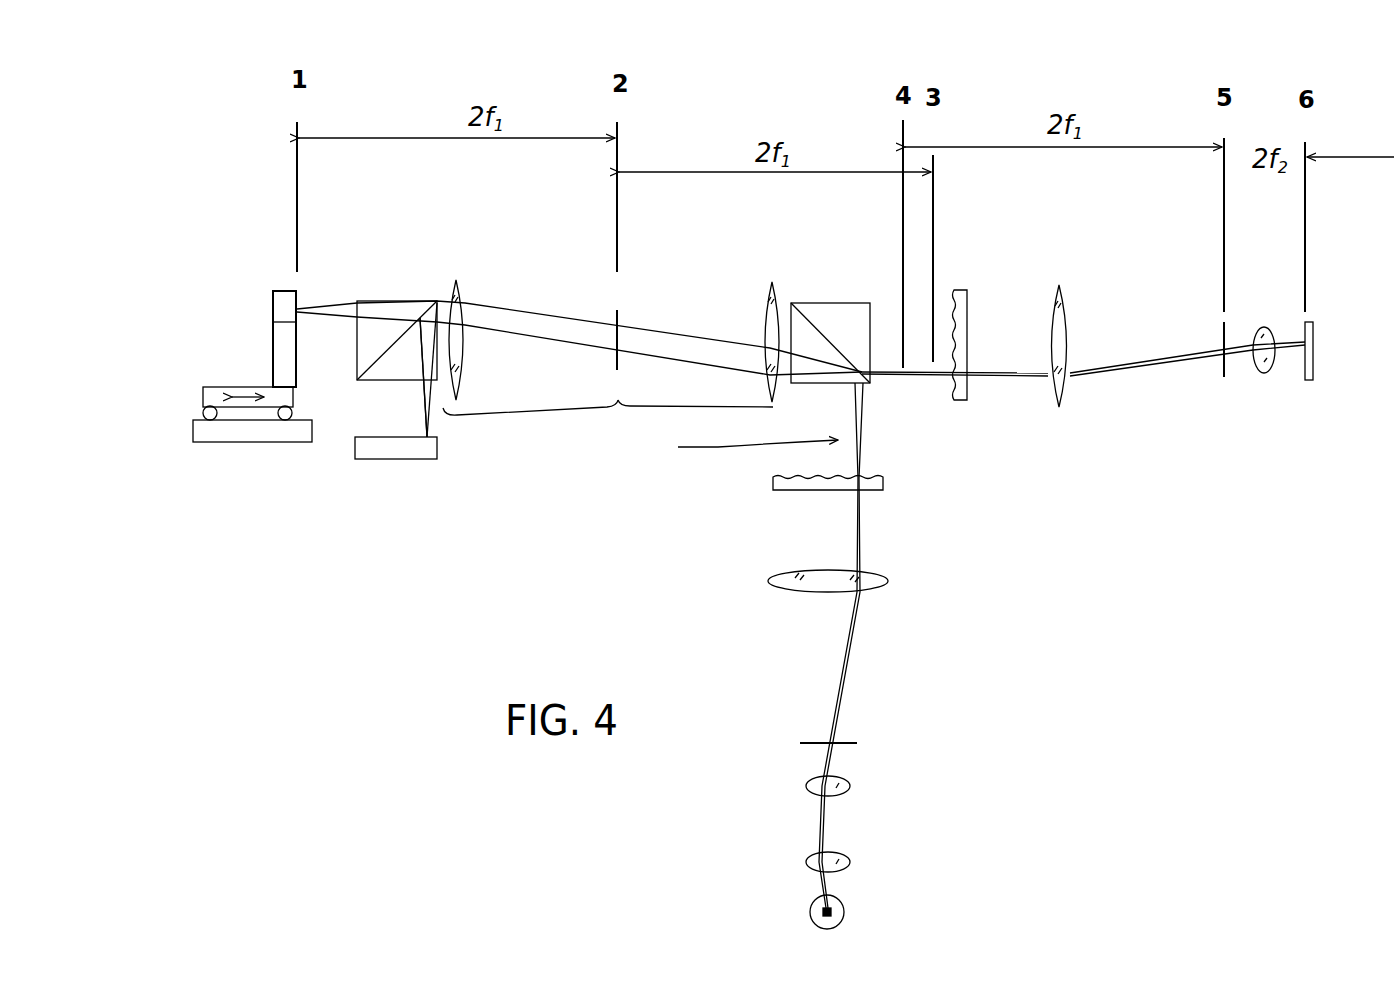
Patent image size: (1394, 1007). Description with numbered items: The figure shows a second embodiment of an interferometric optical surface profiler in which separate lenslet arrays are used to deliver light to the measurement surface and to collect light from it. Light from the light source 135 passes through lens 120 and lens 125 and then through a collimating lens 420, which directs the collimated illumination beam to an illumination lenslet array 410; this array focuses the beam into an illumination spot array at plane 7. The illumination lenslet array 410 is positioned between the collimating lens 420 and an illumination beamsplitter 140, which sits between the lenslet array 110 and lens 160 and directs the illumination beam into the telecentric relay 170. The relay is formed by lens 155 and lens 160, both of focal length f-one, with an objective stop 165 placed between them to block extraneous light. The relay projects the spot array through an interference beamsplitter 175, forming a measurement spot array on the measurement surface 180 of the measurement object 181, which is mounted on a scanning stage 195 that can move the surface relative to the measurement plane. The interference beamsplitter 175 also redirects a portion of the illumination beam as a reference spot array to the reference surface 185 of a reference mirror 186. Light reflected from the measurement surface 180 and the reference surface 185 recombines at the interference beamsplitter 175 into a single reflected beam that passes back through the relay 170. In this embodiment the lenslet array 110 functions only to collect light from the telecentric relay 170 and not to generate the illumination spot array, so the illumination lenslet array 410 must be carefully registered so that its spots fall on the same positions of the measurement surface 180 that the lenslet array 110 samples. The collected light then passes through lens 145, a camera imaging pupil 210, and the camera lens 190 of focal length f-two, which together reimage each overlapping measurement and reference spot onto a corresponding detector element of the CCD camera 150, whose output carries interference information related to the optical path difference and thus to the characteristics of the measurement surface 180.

The measurement surface 180 is at (300, 296).
The measurement object 181 is at (274, 322).
The scanning stage 195 is at (203, 394).
The interference beamsplitter 175 is at (358, 346).
The reference surface 185 is at (414, 435).
The reference mirror 186 is at (396, 445).
The lens 155 is at (467, 290).
The objective stop 165 is at (618, 322).
The telecentric relay lens 170 is at (618, 403).
The plane 7 is at (746, 443).
The lens 160 is at (802, 271).
The illumination beamsplitter 140 is at (822, 318).
The lenslet array 110 is at (967, 305).
The lens 145 is at (1070, 300).
The camera imaging pupil 210 is at (1219, 370).
The camera lens 190 is at (1260, 368).
The CCD camera 150 is at (1314, 338).
The illumination lenslet array 410 is at (884, 483).
The collimating lens 420 is at (888, 583).
The lens 125 is at (850, 786).
The lens 120 is at (850, 862).
The light source 135 is at (845, 910).